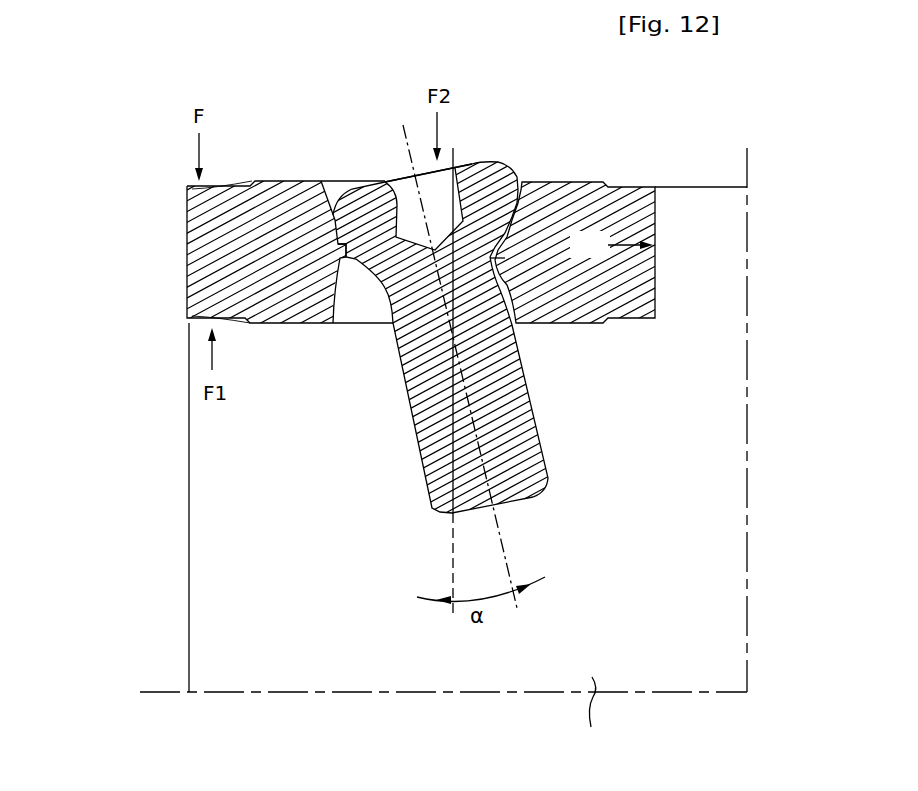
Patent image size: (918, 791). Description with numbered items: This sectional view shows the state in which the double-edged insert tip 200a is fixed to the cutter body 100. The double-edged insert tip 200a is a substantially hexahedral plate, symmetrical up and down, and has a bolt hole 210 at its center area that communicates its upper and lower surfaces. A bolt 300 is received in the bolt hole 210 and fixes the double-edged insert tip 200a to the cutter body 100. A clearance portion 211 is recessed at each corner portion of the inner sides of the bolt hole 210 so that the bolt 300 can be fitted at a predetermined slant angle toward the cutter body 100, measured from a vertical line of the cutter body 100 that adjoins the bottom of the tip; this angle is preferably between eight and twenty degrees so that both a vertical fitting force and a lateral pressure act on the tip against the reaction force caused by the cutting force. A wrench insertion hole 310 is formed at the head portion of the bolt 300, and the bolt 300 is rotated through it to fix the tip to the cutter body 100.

The cutter body 100 is at (598, 741).
The bolt hole 210 is at (370, 316).
The clearance portion 211 is at (341, 205).
The bolt 300 is at (494, 178).
The wrench insertion hole 310 is at (389, 179).
The double-edged insert tip 200a is at (633, 203).